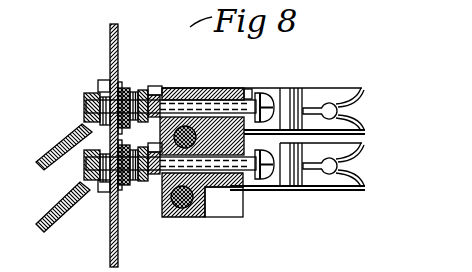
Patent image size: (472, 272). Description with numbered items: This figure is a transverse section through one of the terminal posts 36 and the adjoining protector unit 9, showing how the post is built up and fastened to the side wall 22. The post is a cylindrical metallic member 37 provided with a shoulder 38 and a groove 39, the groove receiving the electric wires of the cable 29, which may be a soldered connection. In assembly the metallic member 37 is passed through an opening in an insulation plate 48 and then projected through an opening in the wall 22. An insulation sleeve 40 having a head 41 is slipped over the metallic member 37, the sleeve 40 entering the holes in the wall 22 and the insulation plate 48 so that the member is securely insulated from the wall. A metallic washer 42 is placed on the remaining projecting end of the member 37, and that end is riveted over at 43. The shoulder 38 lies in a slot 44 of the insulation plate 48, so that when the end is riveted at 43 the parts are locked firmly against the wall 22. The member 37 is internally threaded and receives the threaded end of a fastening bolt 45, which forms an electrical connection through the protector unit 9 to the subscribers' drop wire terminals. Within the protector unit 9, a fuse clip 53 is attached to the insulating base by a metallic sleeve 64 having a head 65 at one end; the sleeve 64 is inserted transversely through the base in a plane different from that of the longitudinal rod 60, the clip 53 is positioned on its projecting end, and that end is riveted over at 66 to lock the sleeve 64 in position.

The protector unit 9 is at (309, 85).
The wall 22 is at (110, 228).
The cable 29 is at (63, 167).
The terminal post 36 is at (88, 97).
The metallic member 37 is at (128, 80).
The shoulder 38 is at (105, 84).
The groove 39 is at (84, 110).
The insulation sleeve 40 is at (121, 72).
The head 41 is at (123, 76).
The metallic washer 42 is at (128, 88).
The riveted-over end 43 is at (164, 90).
The slot 44 is at (107, 76).
The fastening bolt 45 is at (214, 88).
The insulation plate 48 is at (108, 72).
The fuse clip 53 is at (345, 155).
The rod 60 is at (190, 220).
The metallic sleeve 64 is at (233, 88).
The head 65 is at (193, 103).
The riveted-over end 66 is at (265, 96).